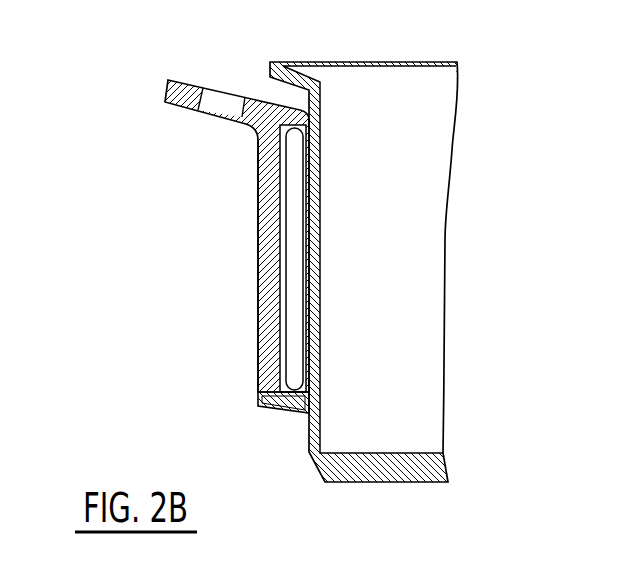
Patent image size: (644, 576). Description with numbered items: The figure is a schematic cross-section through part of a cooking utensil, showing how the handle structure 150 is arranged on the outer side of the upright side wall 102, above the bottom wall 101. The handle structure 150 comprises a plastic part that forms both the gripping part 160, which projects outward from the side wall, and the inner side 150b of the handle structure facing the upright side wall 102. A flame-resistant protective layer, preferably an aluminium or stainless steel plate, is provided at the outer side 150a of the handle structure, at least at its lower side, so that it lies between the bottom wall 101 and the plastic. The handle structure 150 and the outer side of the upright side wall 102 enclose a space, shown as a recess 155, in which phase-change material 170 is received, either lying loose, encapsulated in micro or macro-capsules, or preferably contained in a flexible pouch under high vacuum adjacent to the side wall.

The bottom wall 101 is at (402, 488).
The upright side wall 102 is at (408, 227).
The handle structure 150 is at (197, 328).
The outer side of handle structure 150a is at (257, 283).
The inner side of handle structure 150b is at (270, 294).
The recess 155 is at (258, 406).
The gripping part 160 is at (180, 80).
The phase-change material 170 is at (295, 338).